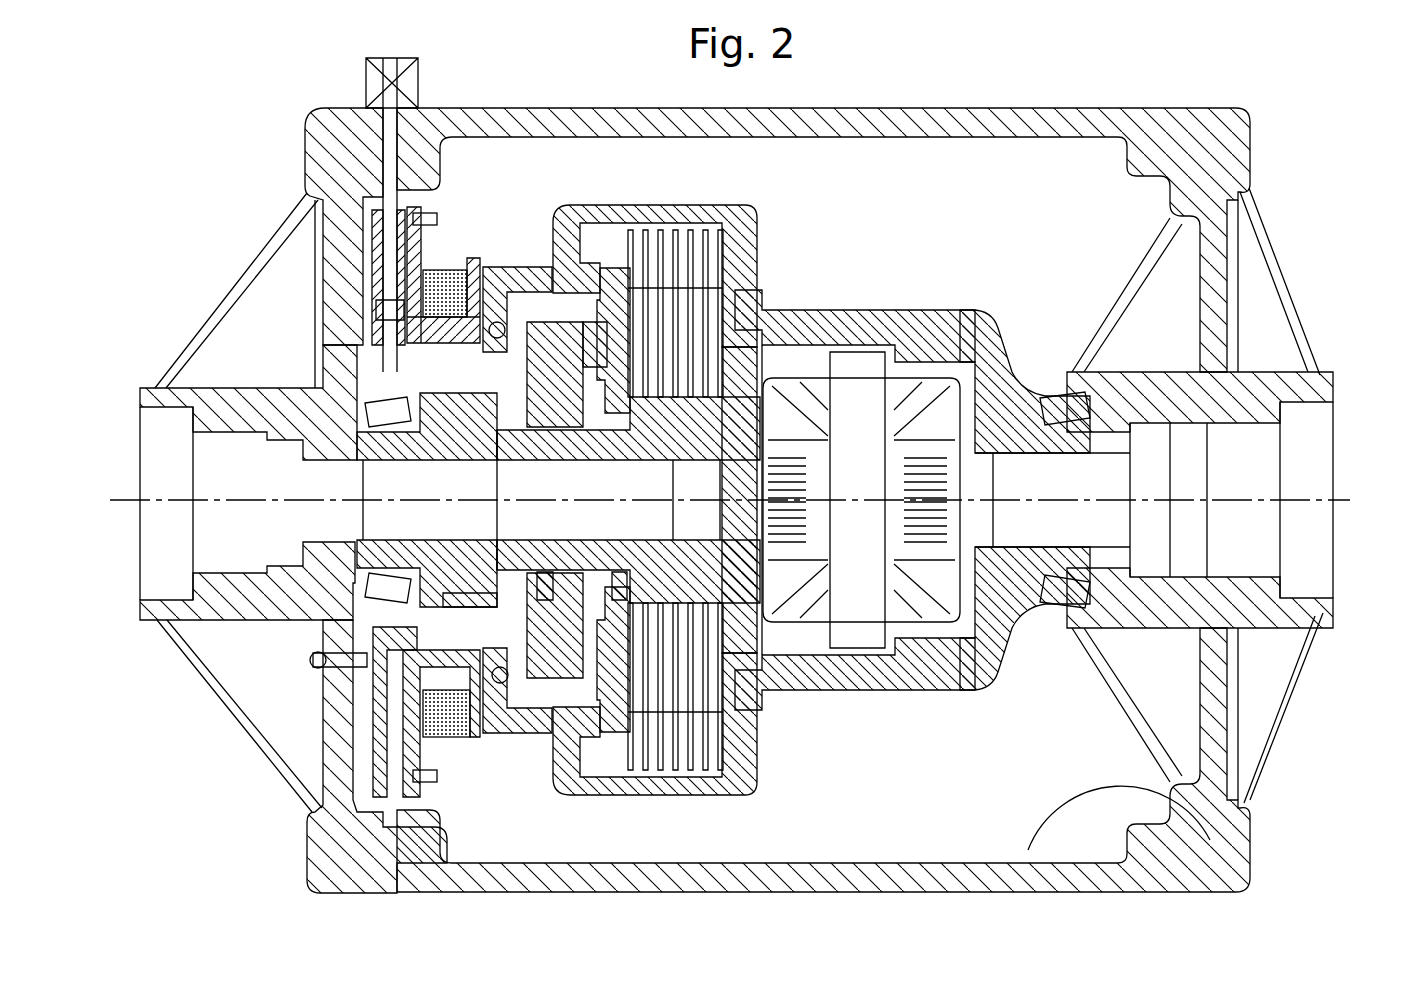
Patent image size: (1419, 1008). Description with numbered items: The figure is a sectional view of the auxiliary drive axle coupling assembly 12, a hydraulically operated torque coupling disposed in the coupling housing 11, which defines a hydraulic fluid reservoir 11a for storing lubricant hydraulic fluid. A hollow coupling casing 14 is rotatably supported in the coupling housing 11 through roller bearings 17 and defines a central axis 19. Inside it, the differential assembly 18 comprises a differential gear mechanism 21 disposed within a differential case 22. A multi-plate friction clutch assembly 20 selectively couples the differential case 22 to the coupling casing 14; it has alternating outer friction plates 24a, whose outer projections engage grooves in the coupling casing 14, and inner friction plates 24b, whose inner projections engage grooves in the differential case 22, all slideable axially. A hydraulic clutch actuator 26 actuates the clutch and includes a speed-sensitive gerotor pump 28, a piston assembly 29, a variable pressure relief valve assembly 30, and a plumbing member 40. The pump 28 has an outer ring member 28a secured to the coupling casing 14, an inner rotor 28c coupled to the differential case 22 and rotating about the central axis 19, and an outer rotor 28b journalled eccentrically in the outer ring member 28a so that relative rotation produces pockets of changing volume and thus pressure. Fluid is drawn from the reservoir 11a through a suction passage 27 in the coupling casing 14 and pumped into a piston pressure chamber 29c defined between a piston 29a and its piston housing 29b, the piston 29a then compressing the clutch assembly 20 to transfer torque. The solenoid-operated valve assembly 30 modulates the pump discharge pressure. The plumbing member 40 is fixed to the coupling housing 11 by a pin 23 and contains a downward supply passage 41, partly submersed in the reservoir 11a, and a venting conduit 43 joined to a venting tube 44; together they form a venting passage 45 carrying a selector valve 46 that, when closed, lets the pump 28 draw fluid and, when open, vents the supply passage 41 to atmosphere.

The coupling housing 11 is at (312, 150).
The hydraulic fluid reservoir 11a is at (1240, 856).
The auxiliary drive axle coupling assembly 12 is at (603, 201).
The coupling casing 14 is at (808, 312).
The roller bearings 17 is at (387, 436).
The differential assembly 18 is at (906, 370).
The central axis 19 is at (1350, 500).
The friction clutch assembly 20 is at (697, 502).
The differential gear mechanism 21 is at (897, 550).
The differential case 22 is at (962, 630).
The pin 23 is at (322, 346).
The outer friction plates 24a is at (633, 770).
The inner friction plates 24b is at (638, 398).
The hydraulic clutch actuator 26 is at (473, 754).
The suction passage 27 is at (468, 594).
The hydraulic displacement pump 28 is at (621, 520).
The outer ring member 28a is at (563, 718).
The outer rotor 28b is at (556, 322).
The inner rotor 28c is at (554, 410).
The piston assembly 29 is at (594, 438).
The piston 29a is at (618, 600).
The piston housing 29b is at (608, 770).
The piston pressure chamber 29c is at (545, 600).
The variable pressure relief valve assembly 30 is at (478, 265).
The plumbing member 40 is at (366, 708).
The supply passage 41 is at (387, 745).
The venting conduit 43 is at (394, 310).
The venting tube 44 is at (399, 203).
The venting passage 45 is at (383, 216).
The selector valve 46 is at (366, 86).